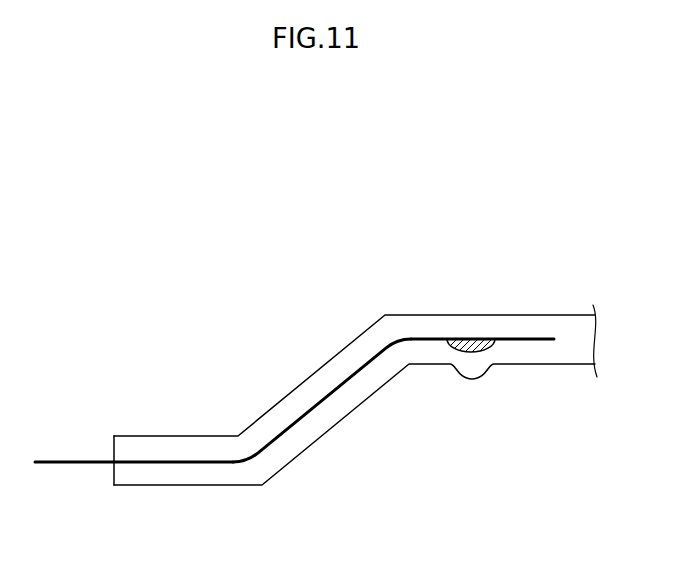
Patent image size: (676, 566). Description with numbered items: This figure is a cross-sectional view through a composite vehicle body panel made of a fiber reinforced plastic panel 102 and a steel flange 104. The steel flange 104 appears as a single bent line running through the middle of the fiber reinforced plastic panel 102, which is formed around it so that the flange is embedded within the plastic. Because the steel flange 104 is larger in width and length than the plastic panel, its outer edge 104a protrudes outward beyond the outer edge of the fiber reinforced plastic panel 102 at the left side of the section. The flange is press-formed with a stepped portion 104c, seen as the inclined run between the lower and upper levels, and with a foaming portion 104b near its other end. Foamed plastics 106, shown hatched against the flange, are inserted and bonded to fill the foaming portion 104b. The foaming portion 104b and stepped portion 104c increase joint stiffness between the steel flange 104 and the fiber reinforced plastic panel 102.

The fiber reinforced plastic panel 102 is at (418, 313).
The steel flange 104 is at (294, 436).
The outer edge of the steel flange 104a is at (73, 464).
The foaming portion 104b is at (488, 352).
The stepped portion 104c is at (324, 403).
The foamed plastics 106 is at (473, 338).